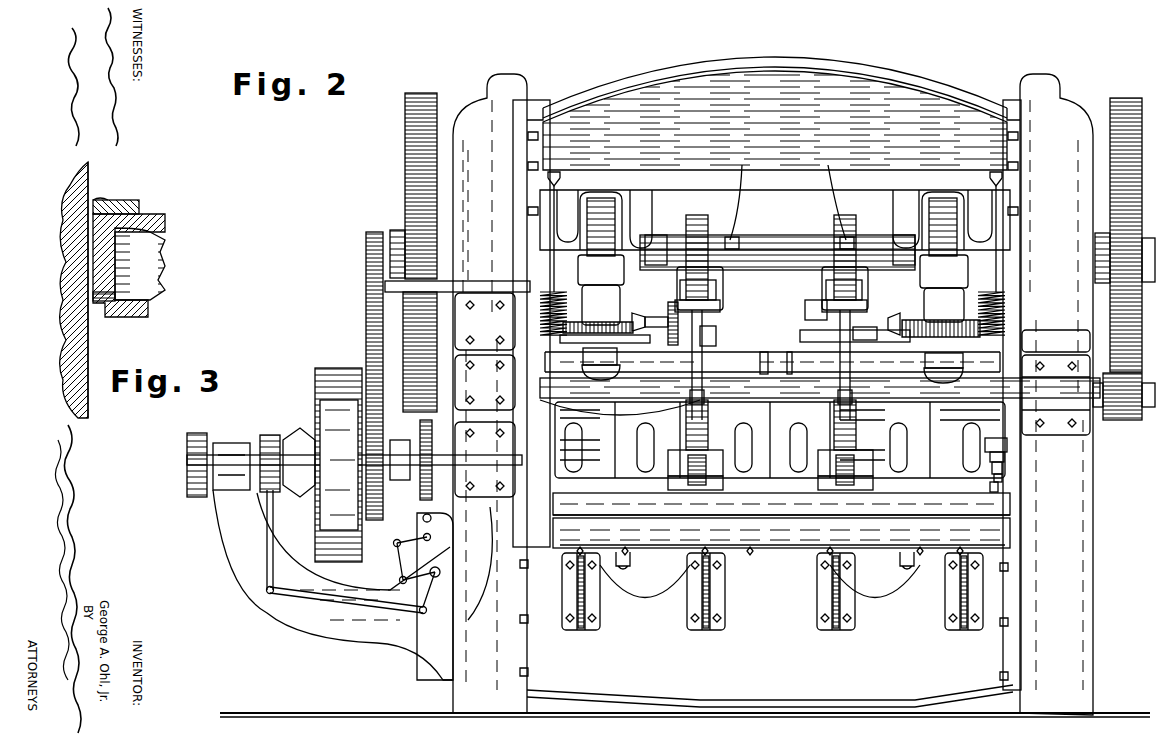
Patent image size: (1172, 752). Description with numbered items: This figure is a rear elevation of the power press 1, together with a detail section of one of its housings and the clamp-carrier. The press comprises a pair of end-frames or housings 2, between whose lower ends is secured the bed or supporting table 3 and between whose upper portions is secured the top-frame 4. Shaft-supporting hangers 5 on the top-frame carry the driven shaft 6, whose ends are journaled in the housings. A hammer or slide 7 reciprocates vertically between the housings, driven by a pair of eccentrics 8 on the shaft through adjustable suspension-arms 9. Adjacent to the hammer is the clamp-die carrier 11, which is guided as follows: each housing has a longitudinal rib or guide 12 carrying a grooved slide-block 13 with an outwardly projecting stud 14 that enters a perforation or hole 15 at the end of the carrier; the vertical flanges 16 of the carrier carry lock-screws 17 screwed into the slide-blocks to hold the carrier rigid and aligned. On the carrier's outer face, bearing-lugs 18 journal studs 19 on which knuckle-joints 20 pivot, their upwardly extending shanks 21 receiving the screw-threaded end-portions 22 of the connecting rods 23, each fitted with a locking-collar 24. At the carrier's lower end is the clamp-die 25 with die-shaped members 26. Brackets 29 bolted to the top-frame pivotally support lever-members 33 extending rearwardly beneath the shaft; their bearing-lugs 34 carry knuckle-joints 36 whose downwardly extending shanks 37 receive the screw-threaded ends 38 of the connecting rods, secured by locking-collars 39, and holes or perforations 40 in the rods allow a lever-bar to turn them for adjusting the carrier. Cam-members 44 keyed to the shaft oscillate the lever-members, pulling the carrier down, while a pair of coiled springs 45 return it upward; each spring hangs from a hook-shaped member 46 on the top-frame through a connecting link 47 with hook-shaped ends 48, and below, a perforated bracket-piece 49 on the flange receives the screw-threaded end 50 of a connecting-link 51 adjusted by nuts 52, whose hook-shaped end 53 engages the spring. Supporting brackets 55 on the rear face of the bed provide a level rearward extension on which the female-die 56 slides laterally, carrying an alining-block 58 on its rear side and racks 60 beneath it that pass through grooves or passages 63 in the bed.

In FIG. 2, the power press 1 is at (685, 434).
In FIG. 3, the end-frame or housing 2 is at (70, 220).
In FIG. 2, the end-frame or housing 2 is at (488, 92).
In FIG. 2, the bed or supporting table 3 is at (770, 658).
In FIG. 2, the top-frame 4 is at (800, 67).
In FIG. 2, the shaft-supporting hanger 5 is at (620, 315).
In FIG. 2, the driven shaft 6 is at (776, 245).
In FIG. 2, the hammer or slide 7 is at (761, 364).
In FIG. 2, the eccentric 8 is at (608, 205).
In FIG. 2, the adjustable suspension-arm 9 is at (777, 331).
In FIG. 3, the clamp-die carrier 11 is at (165, 240).
In FIG. 2, the clamp-die carrier 11 is at (791, 364).
In FIG. 3, the rib or guide 12 is at (95, 204).
In FIG. 2, the rib or guide 12 is at (538, 498).
In FIG. 3, the slide-block 13 is at (150, 222).
In FIG. 2, the slide-block 13 is at (1002, 478).
In FIG. 3, the stud 14 is at (130, 204).
In FIG. 3, the perforation or hole 15 is at (112, 200).
In FIG. 2, the vertical flange 16 is at (1002, 468).
In FIG. 3, the lock-screw 17 is at (118, 296).
In FIG. 2, the lock-screw 17 is at (982, 479).
In FIG. 2, the bearing-lug 18 is at (670, 480).
In FIG. 2, the stud 19 is at (780, 440).
In FIG. 2, the knuckle-joint 20 is at (698, 486).
In FIG. 2, the shank 21 is at (780, 444).
In FIG. 2, the screw-threaded end-portion 22 is at (772, 425).
In FIG. 2, the connecting rod 23 is at (820, 390).
In FIG. 2, the locking-collar 24 is at (690, 440).
In FIG. 2, the clamp-die 25 is at (768, 495).
In FIG. 2, the die-shaped member 26 is at (805, 520).
In FIG. 2, the bracket 29 is at (660, 245).
In FIG. 2, the lever-member 33 is at (720, 304).
In FIG. 2, the bearing-lug 34 is at (688, 250).
In FIG. 2, the knuckle-joint 36 is at (700, 260).
In FIG. 2, the shank 37 is at (806, 311).
In FIG. 2, the screw-threaded end 38 is at (700, 336).
In FIG. 2, the locking-collar 39 is at (733, 337).
In FIG. 2, the hole or perforation 40 is at (772, 364).
In FIG. 2, the cam-member 44 is at (790, 198).
In FIG. 2, the coiled spring 45 is at (1036, 300).
In FIG. 2, the hook-shaped member 46 is at (556, 180).
In FIG. 2, the connecting link 47 is at (550, 222).
In FIG. 2, the hook-shaped end 48 is at (560, 185).
In FIG. 2, the bracket-piece 49 is at (1116, 438).
In FIG. 2, the screw-threaded end 50 is at (815, 398).
In FIG. 2, the connecting-link 51 is at (1044, 344).
In FIG. 2, the nut 52 is at (1116, 460).
In FIG. 2, the hook-shaped end 53 is at (772, 322).
In FIG. 2, the supporting bracket 55 is at (690, 608).
In FIG. 2, the female-die 56 is at (782, 567).
In FIG. 2, the alining-block 58 is at (870, 545).
In FIG. 2, the rack 60 is at (765, 565).
In FIG. 2, the groove or passage 63 is at (760, 581).